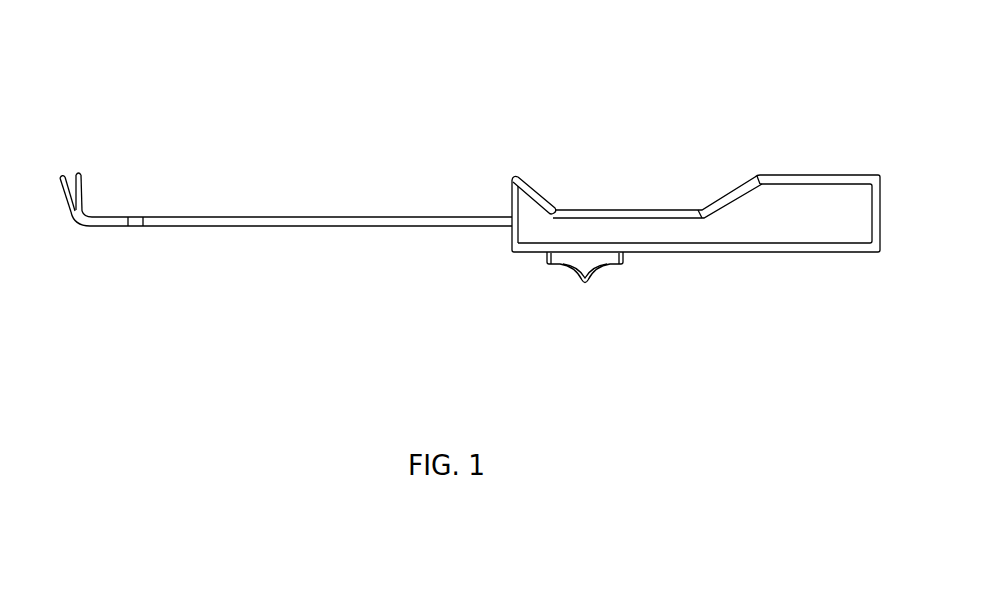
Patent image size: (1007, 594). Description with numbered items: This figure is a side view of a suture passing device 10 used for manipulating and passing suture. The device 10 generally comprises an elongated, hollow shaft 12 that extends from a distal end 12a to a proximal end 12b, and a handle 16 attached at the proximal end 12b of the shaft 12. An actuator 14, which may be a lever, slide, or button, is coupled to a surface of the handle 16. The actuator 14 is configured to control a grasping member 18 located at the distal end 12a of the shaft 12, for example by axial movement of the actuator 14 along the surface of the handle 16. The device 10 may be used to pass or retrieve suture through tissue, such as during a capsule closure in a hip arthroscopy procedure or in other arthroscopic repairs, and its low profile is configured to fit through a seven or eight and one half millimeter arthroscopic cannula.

The suture passing device 10 is at (122, 76).
The shaft 12 is at (200, 227).
The distal end 12a is at (72, 217).
The proximal end 12b is at (531, 198).
The actuator 14 is at (597, 280).
The handle 16 is at (647, 234).
The grasping member 18 is at (88, 185).